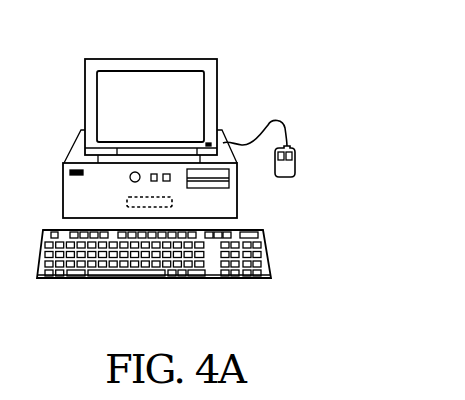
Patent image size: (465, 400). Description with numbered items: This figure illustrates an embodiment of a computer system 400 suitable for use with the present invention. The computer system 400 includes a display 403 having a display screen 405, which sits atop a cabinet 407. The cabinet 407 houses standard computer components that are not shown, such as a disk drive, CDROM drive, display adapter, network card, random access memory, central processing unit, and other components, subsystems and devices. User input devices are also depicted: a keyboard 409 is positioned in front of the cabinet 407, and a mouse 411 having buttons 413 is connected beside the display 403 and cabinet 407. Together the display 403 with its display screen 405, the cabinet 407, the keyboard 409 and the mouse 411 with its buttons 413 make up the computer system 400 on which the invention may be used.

The computer system 400 is at (356, 51).
The display 403 is at (182, 88).
The display screen 405 is at (190, 78).
The cabinet 407 is at (225, 137).
The keyboard 409 is at (90, 278).
The mouse 411 is at (300, 145).
The buttons 413 is at (290, 152).